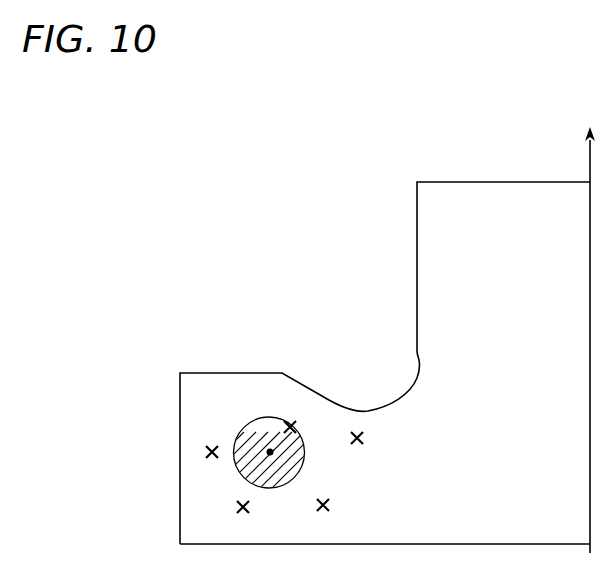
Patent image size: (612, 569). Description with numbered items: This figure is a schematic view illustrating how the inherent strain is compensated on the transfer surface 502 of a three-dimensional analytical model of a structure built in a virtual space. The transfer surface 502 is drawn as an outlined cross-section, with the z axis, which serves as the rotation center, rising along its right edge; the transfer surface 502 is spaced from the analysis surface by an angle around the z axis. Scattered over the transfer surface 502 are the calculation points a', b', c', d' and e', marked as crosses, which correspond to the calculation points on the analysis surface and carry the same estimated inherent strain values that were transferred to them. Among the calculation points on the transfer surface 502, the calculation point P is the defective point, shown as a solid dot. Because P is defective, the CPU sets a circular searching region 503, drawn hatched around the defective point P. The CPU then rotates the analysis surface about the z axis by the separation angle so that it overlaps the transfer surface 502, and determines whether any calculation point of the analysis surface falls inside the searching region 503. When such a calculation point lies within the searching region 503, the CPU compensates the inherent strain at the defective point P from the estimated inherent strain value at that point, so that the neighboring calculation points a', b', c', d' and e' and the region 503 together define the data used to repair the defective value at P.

The transfer surface 502 is at (180, 439).
The circular searching region 503 is at (258, 418).
The calculation point P is at (274, 462).
The z axis z is at (589, 331).
The calculation point a' is at (367, 439).
The calculation point b' is at (294, 417).
The calculation point c' is at (202, 452).
The calculation point d' is at (333, 509).
The calculation point e' is at (233, 509).